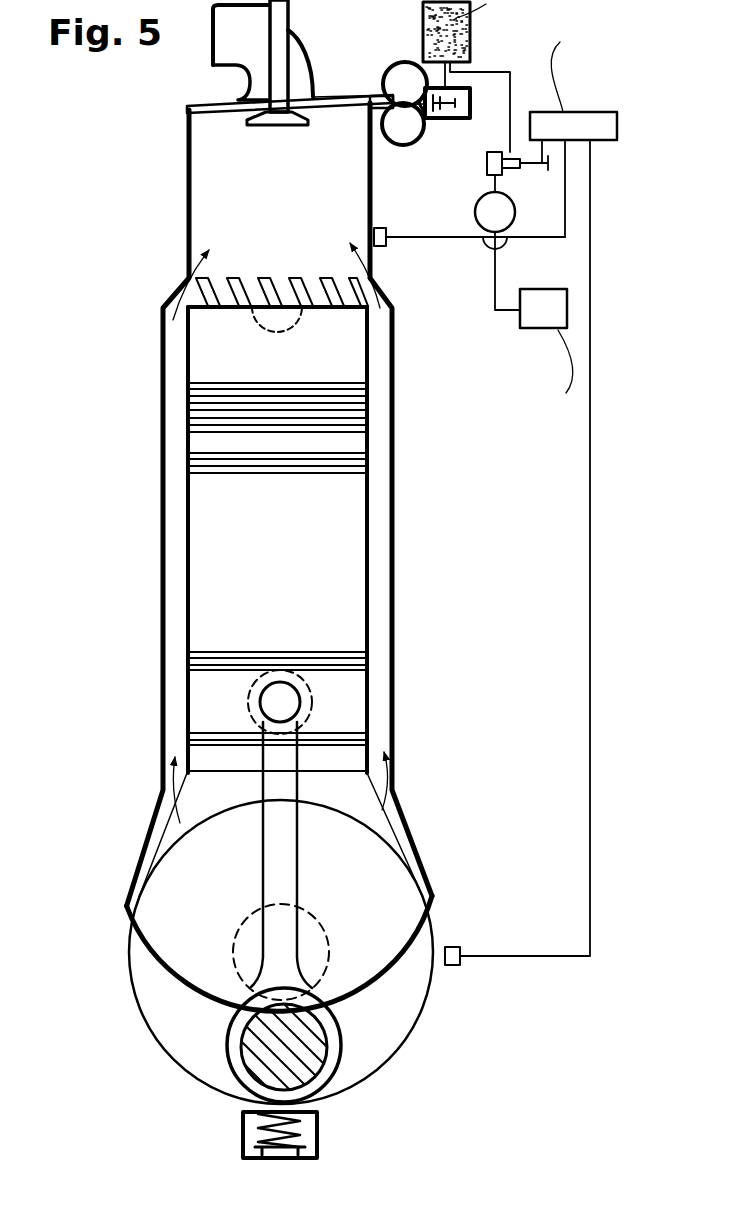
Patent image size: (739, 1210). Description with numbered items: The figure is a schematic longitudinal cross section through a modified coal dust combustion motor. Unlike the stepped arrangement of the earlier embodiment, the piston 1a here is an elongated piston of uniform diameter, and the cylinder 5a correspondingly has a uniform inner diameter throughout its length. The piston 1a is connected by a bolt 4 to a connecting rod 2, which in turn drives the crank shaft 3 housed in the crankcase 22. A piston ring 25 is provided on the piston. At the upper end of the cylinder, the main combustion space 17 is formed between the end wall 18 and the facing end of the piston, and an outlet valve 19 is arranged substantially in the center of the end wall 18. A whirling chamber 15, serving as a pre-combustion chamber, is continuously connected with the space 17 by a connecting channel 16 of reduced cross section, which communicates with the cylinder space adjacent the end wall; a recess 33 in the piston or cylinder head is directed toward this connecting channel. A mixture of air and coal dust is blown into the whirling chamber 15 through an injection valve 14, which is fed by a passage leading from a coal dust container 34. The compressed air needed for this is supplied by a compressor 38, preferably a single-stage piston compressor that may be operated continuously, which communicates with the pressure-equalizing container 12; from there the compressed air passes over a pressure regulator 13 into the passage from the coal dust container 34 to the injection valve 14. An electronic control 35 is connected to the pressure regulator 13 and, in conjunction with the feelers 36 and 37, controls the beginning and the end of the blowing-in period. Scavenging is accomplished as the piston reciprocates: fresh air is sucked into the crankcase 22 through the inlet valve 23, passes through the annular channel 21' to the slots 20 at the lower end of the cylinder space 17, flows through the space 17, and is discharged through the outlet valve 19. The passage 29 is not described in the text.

The piston 1a is at (338, 516).
The connecting rod 2 is at (285, 789).
The crank shaft 3 is at (253, 1047).
The bolt 4 is at (283, 703).
The cylinder 5a is at (378, 458).
The pressure-equalizing container 12 is at (480, 212).
The pressure regulator 13 is at (533, 167).
The injection valve 14 is at (450, 119).
The whirling chamber 15 is at (420, 130).
The connecting channel 16 is at (367, 95).
The main combustion space 17 is at (202, 192).
The end wall 18 is at (324, 95).
The outlet valve 19 is at (276, 52).
The slots 20 is at (265, 277).
The annular channel 21' is at (285, 602).
The crankcase 22 is at (152, 897).
The inlet valve 23 is at (248, 1134).
The piston ring 25 is at (317, 387).
The nozzle passage 29 is at (388, 134).
The recess 33 is at (292, 325).
The coal dust container 34 is at (468, 40).
The electronic control 35 is at (583, 116).
The feeler 36 is at (383, 228).
The feeler 37 is at (453, 945).
The compressor 38 is at (540, 330).